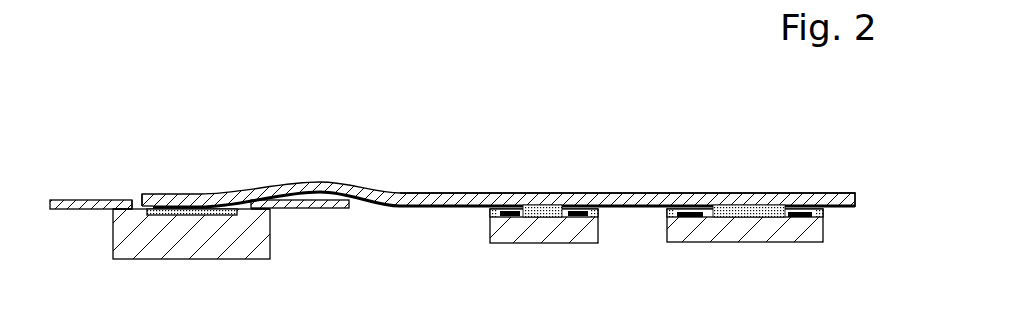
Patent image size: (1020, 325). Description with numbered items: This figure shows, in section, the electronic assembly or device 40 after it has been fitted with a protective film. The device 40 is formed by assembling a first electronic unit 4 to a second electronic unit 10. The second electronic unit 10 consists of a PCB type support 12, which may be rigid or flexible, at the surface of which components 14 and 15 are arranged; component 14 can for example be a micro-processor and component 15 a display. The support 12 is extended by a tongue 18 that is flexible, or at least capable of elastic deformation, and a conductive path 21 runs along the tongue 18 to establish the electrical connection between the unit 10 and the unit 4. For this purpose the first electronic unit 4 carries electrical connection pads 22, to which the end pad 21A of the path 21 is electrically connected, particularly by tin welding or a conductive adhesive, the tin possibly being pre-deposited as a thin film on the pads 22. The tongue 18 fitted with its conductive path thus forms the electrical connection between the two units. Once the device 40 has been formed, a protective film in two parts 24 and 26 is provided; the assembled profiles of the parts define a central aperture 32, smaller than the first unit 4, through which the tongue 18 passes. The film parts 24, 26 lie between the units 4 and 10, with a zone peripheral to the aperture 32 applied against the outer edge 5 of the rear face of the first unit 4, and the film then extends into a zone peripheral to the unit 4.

The first electronic unit 4 is at (162, 242).
The outer edge of the rear face of first electronic unit 5 is at (120, 216).
The second electronic unit 10 is at (627, 197).
The PCB type support 12 is at (525, 200).
The component 14 is at (540, 235).
The component 15 is at (735, 235).
The tongue 18 is at (303, 186).
The conductive path 21 is at (421, 212).
The end pad of conductive path 21A is at (182, 205).
The electrical connection pads 22 is at (210, 217).
The protective film part 24 is at (316, 212).
The protective film part 26 is at (80, 211).
The central aperture 32 is at (136, 199).
The electronic assembly or device 40 is at (473, 184).